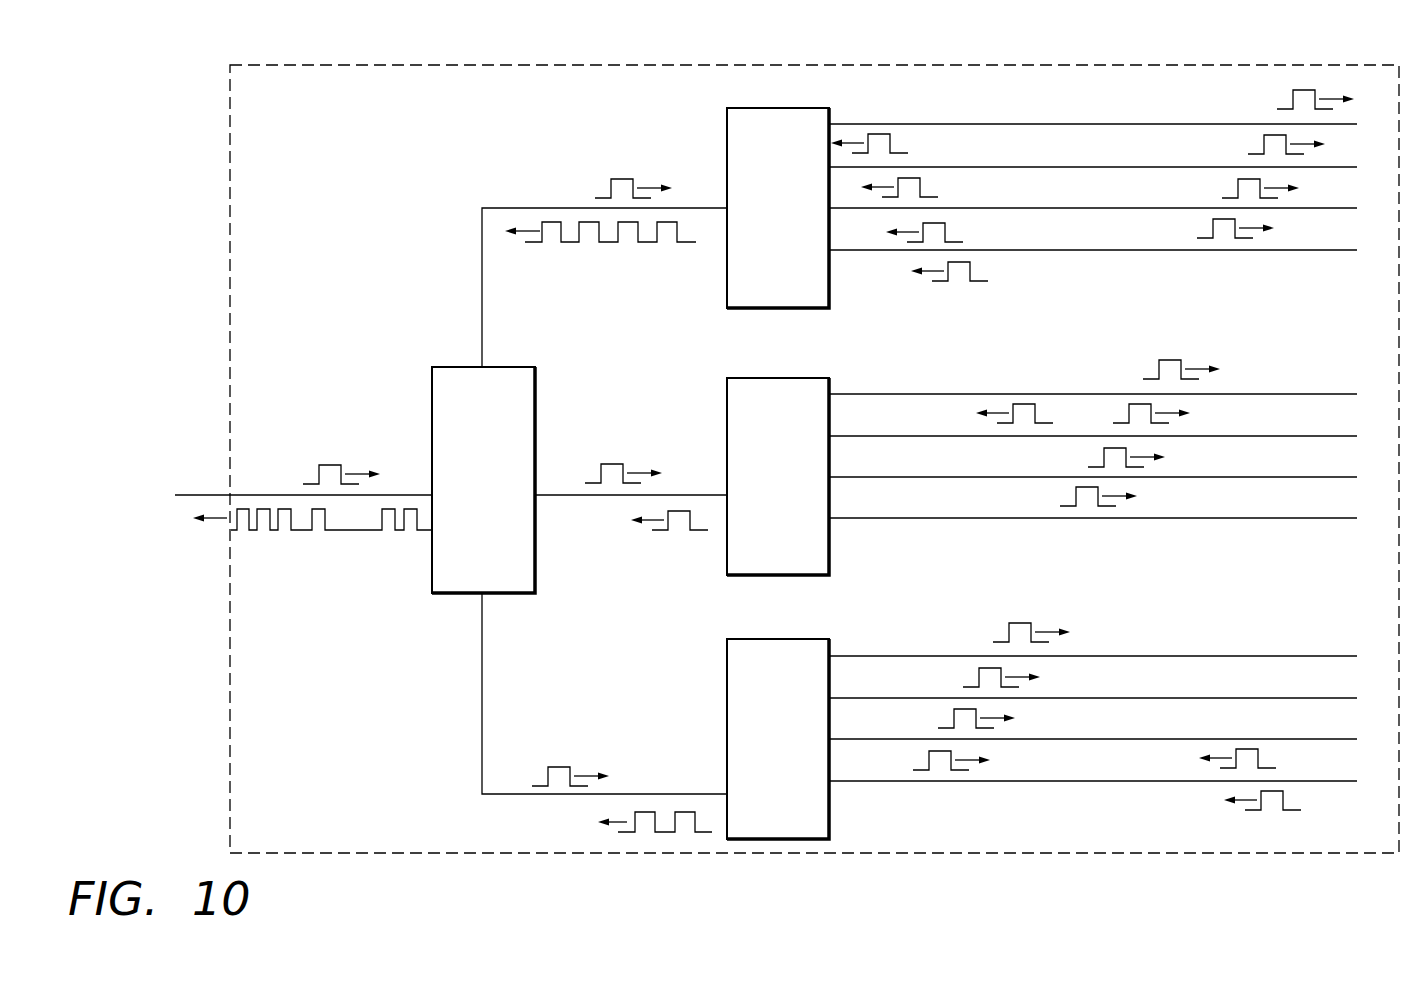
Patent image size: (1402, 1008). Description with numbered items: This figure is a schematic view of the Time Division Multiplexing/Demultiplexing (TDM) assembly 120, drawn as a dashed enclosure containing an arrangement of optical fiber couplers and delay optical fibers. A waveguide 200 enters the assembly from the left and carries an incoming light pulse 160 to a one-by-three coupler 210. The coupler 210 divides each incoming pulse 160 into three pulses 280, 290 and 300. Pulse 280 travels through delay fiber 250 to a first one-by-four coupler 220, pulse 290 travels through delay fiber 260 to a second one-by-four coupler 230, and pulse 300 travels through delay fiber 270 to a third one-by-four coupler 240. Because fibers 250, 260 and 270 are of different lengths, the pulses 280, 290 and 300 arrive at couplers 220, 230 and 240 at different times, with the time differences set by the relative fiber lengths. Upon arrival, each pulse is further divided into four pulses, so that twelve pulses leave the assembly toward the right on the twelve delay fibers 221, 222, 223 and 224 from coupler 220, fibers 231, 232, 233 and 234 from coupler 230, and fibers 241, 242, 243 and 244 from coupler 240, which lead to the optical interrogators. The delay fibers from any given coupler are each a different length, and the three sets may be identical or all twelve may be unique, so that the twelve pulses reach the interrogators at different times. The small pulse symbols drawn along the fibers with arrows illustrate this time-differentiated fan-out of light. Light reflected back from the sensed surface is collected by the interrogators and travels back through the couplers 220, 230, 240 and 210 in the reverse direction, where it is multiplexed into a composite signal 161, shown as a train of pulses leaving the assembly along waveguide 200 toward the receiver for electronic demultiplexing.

The TDM assembly 120 is at (1165, 853).
The light pulse 160 is at (333, 465).
The composite signal 161 is at (340, 533).
The waveguide 200 is at (192, 491).
The 1×3 coupler 210 is at (432, 572).
The 1×4 coupler 220 is at (727, 145).
The delay fiber 221 is at (1110, 124).
The delay fiber 222 is at (1110, 167).
The delay fiber 223 is at (1110, 208).
The delay fiber 224 is at (1110, 250).
The 1×4 coupler 230 is at (727, 400).
The delay fiber 231 is at (940, 394).
The delay fiber 232 is at (940, 436).
The delay fiber 233 is at (940, 477).
The delay fiber 234 is at (940, 518).
The 1×4 coupler 240 is at (727, 650).
The delay fiber 241 is at (1165, 656).
The delay fiber 242 is at (1165, 698).
The delay fiber 243 is at (1165, 739).
The delay fiber 244 is at (1165, 781).
The delay fiber 250 is at (482, 303).
The delay fiber 260 is at (548, 496).
The delay fiber 270 is at (482, 640).
The pulse 280 is at (623, 178).
The pulse 290 is at (617, 465).
The pulse 300 is at (565, 765).